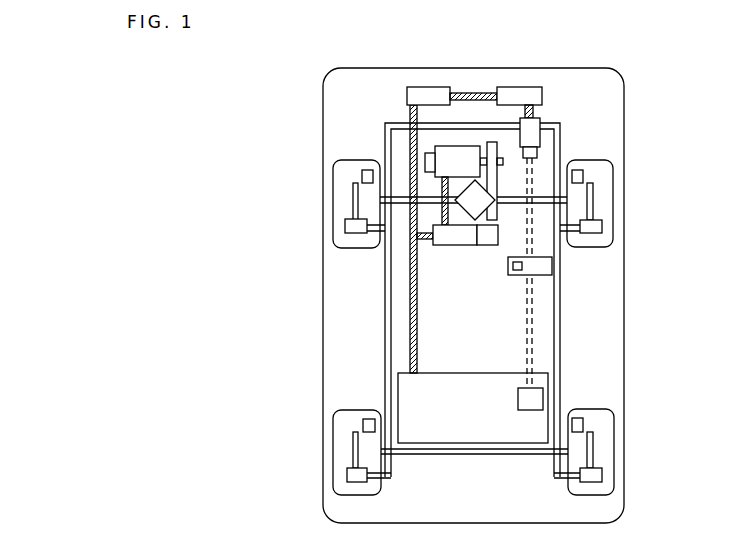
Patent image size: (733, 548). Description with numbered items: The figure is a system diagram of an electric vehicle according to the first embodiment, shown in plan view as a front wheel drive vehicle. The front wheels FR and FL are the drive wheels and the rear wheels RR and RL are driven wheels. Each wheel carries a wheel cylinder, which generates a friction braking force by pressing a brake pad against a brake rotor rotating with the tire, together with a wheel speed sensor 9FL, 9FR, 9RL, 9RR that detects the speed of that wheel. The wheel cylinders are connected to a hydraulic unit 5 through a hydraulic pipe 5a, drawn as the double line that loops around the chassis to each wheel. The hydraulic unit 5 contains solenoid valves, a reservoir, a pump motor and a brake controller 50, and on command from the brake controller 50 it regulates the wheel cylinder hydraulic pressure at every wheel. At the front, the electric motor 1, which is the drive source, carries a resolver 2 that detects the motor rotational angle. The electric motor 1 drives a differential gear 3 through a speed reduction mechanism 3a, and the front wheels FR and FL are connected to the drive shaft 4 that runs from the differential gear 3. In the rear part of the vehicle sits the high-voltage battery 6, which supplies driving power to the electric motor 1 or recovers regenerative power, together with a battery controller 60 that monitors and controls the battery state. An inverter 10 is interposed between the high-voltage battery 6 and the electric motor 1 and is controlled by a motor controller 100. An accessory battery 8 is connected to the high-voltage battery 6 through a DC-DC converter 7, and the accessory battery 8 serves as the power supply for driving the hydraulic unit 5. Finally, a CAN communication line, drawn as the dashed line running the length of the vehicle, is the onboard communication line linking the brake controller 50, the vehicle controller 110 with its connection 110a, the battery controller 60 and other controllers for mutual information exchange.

The electric motor 1 is at (462, 146).
The resolver 2 is at (425, 157).
The differential gear 3 is at (492, 193).
The speed reduction mechanism 3a is at (489, 138).
The drive shaft 4 is at (410, 205).
The hydraulic unit 5 is at (541, 119).
The hydraulic pipe 5a is at (392, 372).
The high-voltage battery 6 is at (548, 380).
The DC-DC converter 7 is at (408, 87).
The accessory battery 8 is at (518, 87).
The inverter 10 is at (442, 245).
The brake controller 50 is at (541, 152).
The battery controller 60 is at (543, 400).
The motor controller 100 is at (482, 245).
The vehicle controller 110 is at (552, 260).
The communication connector 110a is at (518, 272).
The CAN communication line CAN is at (556, 295).
The front left wheel FL is at (333, 199).
The front right wheel FR is at (613, 200).
The rear left wheel RL is at (333, 448).
The rear right wheel RR is at (614, 446).
The wheel speed sensor 9FL is at (362, 177).
The wheel speed sensor 9FR is at (583, 176).
The wheel speed sensor 9RL is at (363, 425).
The wheel speed sensor 9RR is at (583, 425).